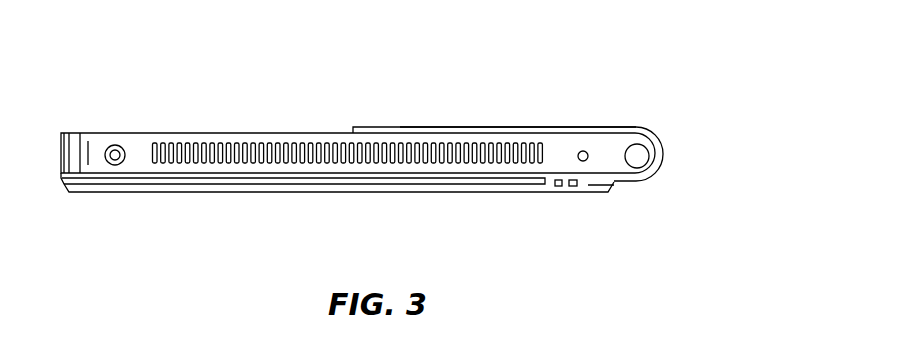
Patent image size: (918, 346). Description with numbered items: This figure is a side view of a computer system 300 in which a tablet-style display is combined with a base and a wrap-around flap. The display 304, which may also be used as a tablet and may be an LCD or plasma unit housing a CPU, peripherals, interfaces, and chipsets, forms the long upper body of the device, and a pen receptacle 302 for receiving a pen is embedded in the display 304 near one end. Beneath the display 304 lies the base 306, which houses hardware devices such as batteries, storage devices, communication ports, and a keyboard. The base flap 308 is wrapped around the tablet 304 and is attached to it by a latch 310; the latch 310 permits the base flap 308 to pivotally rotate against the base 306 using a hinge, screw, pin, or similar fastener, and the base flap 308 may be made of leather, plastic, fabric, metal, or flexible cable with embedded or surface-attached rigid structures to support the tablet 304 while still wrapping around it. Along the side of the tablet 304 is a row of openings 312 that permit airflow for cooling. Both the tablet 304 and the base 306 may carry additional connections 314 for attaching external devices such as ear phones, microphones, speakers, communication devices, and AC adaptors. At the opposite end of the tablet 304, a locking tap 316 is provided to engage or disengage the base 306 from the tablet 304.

The computer system 300 is at (682, 56).
The pen receptacle 302 is at (637, 156).
The display 304 is at (134, 143).
The base 306 is at (243, 192).
The base flap 308 is at (552, 128).
The latch 310 is at (370, 128).
The openings 312 is at (263, 143).
The connections 314 is at (583, 161).
The locking tap 316 is at (115, 162).